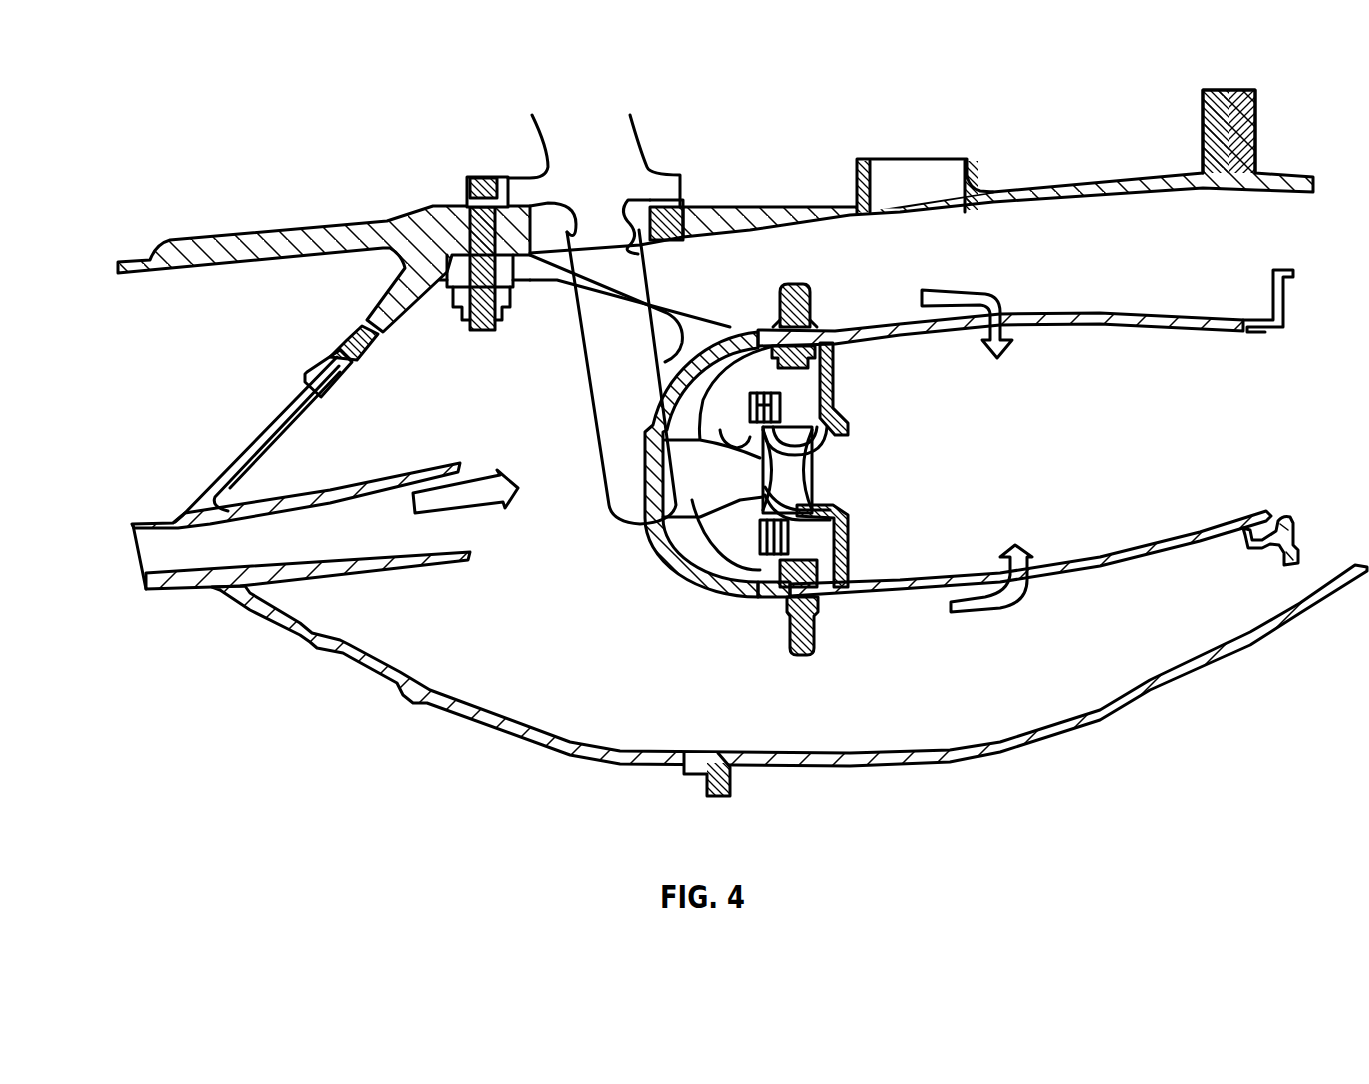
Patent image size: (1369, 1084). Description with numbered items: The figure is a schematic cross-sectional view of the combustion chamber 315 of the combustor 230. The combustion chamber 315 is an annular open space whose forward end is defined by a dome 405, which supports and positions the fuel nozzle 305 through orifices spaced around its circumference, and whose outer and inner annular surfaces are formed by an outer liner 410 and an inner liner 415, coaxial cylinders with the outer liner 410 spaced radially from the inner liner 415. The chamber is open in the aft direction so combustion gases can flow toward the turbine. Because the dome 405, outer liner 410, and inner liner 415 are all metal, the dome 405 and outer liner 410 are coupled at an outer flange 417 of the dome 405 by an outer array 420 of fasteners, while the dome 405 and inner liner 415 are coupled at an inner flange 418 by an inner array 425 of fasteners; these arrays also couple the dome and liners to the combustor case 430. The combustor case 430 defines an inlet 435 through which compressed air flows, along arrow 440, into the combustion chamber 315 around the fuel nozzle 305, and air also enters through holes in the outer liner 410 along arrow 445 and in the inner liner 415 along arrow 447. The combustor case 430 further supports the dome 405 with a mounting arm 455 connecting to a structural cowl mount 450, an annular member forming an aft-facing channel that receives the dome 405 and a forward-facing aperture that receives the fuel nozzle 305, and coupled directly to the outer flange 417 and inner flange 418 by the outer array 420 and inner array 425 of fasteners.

The combustor 230 is at (122, 153).
The fuel nozzle 305 is at (734, 489).
The combustion chamber 315 is at (1103, 440).
The dome 405 is at (833, 385).
The outer liner 410 is at (1093, 315).
The inner liner 415 is at (1132, 548).
The outer flange 417 is at (832, 352).
The inner flange 418 is at (852, 588).
The outer array of fasteners 420 is at (790, 292).
The inner array of fasteners 425 is at (800, 628).
The combustor case 430 is at (313, 228).
The inlet 435 is at (326, 549).
The arrow 440 is at (464, 492).
The arrow 445 is at (990, 297).
The arrow 447 is at (988, 612).
The structural cowl mount 450 is at (667, 540).
The mounting arm 455 is at (667, 322).